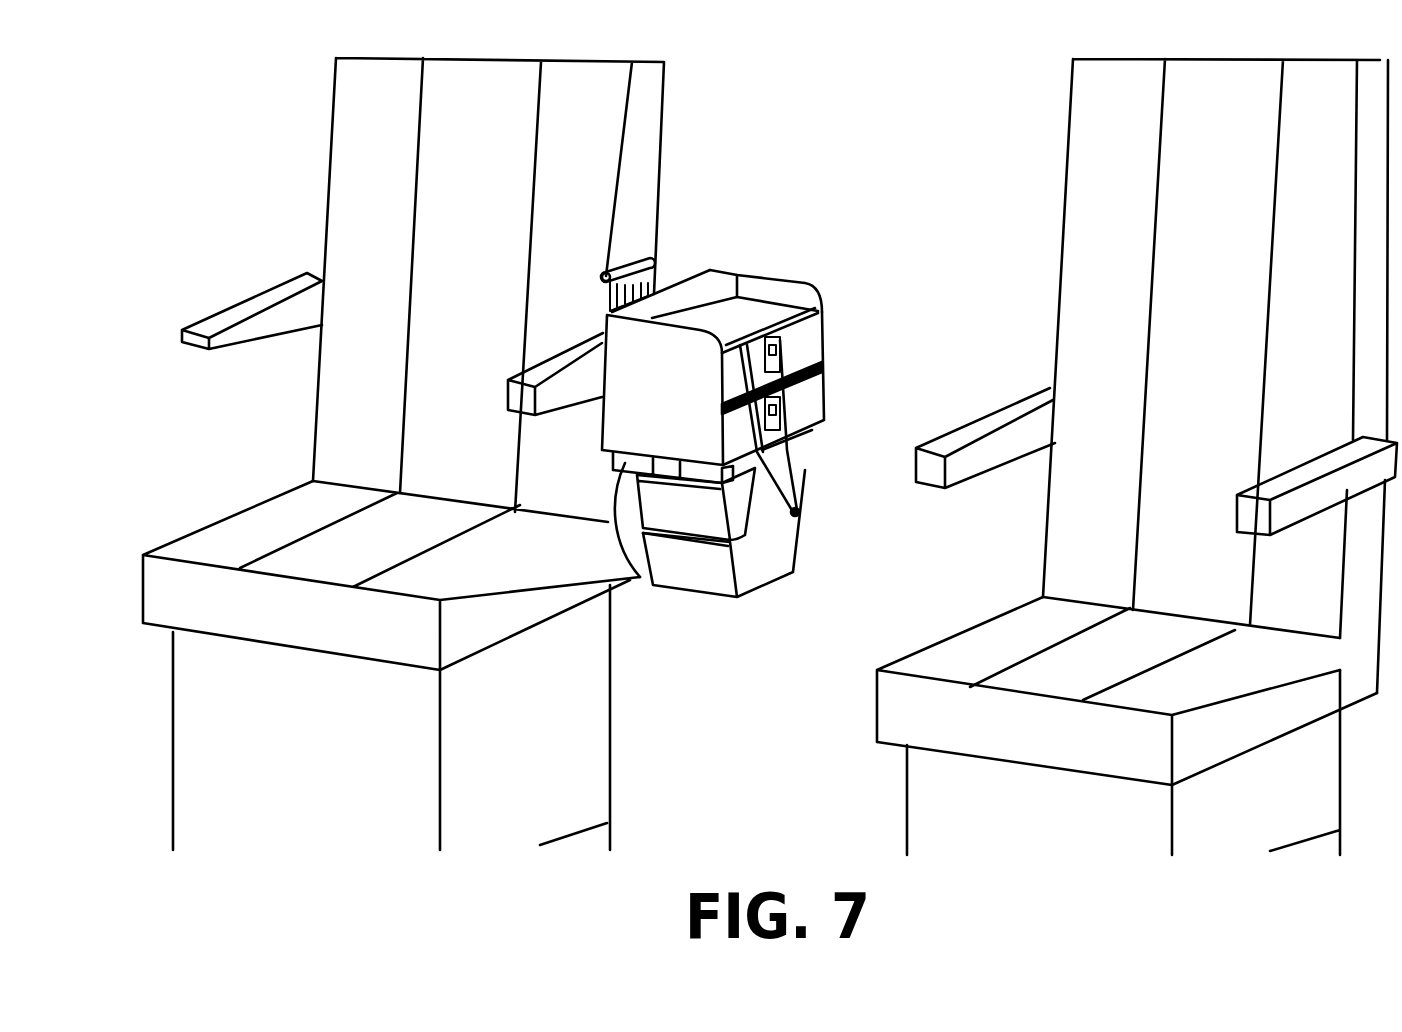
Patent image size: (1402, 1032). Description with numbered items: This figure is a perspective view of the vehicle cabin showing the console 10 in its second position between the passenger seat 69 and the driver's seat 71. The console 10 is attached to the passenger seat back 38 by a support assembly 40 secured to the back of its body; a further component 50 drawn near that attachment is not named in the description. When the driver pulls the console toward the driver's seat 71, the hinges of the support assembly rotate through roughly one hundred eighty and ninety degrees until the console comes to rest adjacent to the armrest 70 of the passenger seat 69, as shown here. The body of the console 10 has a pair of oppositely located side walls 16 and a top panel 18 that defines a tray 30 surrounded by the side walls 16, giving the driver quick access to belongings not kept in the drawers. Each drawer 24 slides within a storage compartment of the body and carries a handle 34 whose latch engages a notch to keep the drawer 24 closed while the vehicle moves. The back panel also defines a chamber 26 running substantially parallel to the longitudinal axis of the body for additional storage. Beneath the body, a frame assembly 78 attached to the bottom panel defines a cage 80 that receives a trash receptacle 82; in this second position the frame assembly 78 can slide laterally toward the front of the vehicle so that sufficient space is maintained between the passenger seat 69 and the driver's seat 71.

The console 10 is at (845, 172).
The side walls 16 is at (805, 478).
The top panel 18 is at (757, 293).
The drawer 24 is at (812, 393).
The chamber 26 is at (737, 273).
The tray 30 is at (783, 317).
The handle 34 is at (815, 420).
The passenger seat back 38 is at (608, 273).
The support assembly 40 is at (662, 283).
The mounting edge 50 is at (655, 288).
The passenger seat 69 is at (364, 190).
The armrest 70 is at (512, 398).
The driver's seat 71 is at (1088, 282).
The frame assembly 78 is at (640, 577).
The cage 80 is at (687, 537).
The trash receptacle 82 is at (752, 582).